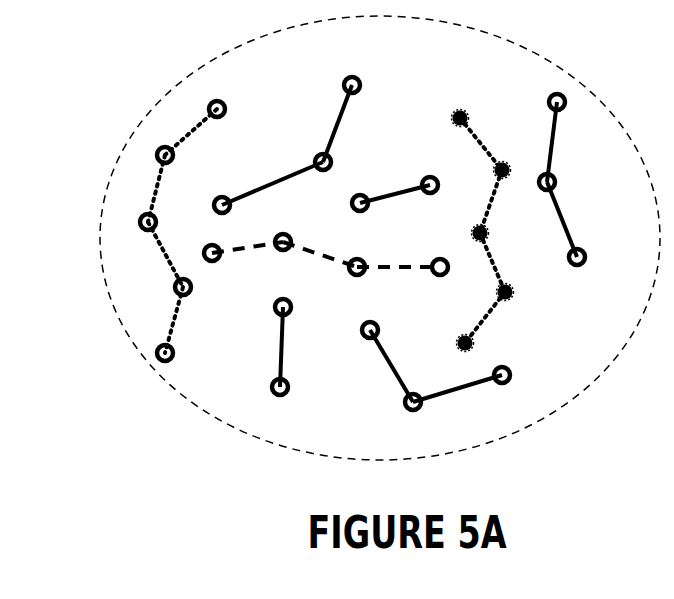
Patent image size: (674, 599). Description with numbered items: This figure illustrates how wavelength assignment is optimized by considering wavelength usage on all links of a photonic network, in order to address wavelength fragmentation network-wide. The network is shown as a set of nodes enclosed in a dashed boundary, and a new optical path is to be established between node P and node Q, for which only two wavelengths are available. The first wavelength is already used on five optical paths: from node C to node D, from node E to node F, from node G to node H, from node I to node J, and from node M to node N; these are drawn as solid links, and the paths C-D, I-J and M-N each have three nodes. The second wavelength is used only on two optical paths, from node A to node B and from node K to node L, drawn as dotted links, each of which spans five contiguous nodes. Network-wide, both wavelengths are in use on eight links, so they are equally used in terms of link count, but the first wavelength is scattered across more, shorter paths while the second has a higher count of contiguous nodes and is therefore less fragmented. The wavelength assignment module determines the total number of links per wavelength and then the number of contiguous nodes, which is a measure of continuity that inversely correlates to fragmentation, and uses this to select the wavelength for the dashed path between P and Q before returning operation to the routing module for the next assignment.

The node A is at (176, 358).
The node B is at (230, 108).
The node C is at (222, 192).
The node D is at (353, 69).
The node E is at (280, 402).
The node F is at (284, 292).
The node G is at (347, 208).
The node H is at (444, 182).
The node I is at (363, 321).
The node J is at (515, 373).
The node K is at (449, 113).
The node L is at (456, 347).
The node M is at (549, 89).
The node N is at (587, 274).
The node P is at (215, 272).
The node Q is at (446, 284).